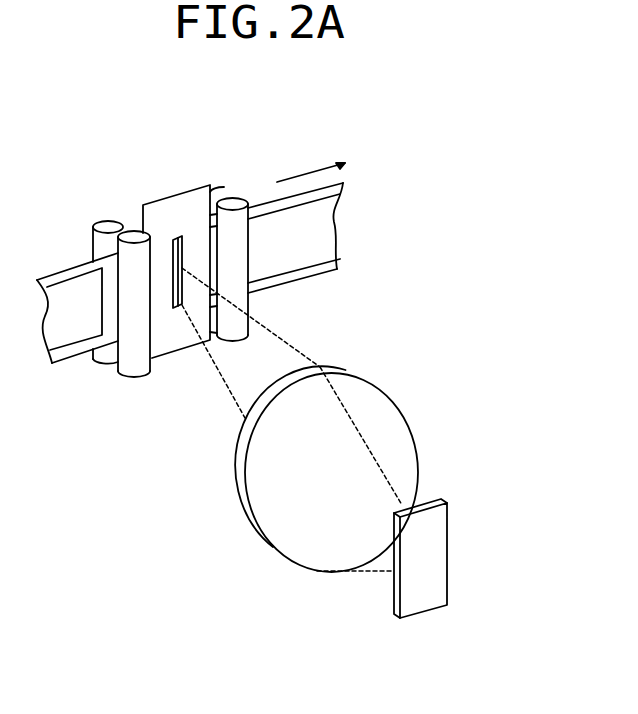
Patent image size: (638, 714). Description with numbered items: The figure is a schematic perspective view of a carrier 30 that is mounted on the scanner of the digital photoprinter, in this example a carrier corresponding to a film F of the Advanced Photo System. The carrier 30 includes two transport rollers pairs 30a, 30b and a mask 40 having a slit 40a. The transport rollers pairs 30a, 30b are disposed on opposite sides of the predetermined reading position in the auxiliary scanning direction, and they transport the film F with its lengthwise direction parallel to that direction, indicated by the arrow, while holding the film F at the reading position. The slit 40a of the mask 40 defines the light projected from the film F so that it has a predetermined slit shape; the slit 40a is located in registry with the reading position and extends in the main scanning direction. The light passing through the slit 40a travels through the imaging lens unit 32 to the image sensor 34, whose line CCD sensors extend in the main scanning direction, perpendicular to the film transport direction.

The carrier 30 is at (113, 188).
The transport rollers pair 30a is at (132, 362).
The transport rollers pair 30b is at (233, 275).
The mask 40 is at (173, 337).
The slit 40a is at (178, 238).
The film F is at (343, 222).
The imaging lens unit 32 is at (373, 408).
The image sensor 34 is at (433, 550).